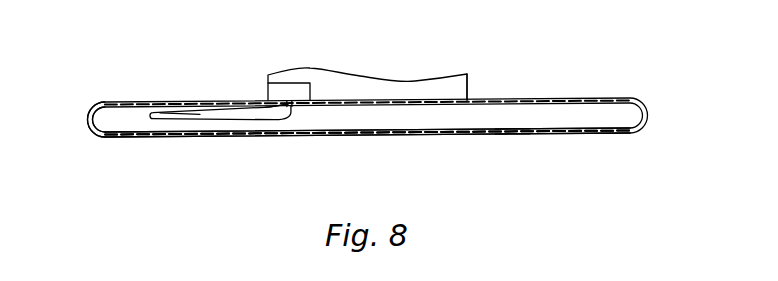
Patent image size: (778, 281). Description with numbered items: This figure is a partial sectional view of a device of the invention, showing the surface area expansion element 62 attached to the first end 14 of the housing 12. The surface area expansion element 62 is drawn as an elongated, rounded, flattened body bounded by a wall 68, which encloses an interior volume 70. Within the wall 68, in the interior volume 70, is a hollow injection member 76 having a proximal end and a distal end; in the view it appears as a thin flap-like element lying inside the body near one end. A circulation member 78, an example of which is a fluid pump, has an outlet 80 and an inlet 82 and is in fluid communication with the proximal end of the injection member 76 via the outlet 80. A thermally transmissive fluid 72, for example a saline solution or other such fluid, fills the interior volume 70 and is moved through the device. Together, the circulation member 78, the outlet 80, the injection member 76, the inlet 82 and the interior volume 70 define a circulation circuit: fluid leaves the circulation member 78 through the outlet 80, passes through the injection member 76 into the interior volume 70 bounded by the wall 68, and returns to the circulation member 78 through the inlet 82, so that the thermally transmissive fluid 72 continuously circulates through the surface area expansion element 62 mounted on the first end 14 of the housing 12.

The housing 12 is at (475, 77).
The first end 14 is at (470, 88).
The surface area expansion element 62 is at (608, 100).
The wall 68 is at (420, 136).
The interior volume 70 is at (125, 118).
The thermally transmissive fluid 72 is at (510, 124).
The hollow injection member 76 is at (195, 124).
The circulation member 78 is at (259, 99).
The outlet 80 is at (283, 102).
The inlet 82 is at (291, 108).